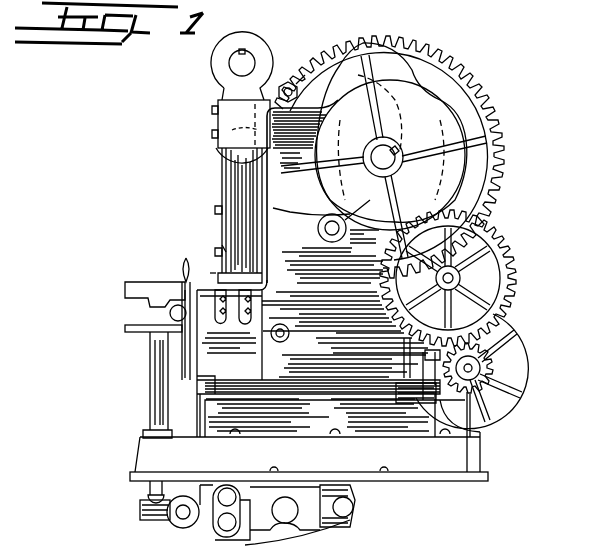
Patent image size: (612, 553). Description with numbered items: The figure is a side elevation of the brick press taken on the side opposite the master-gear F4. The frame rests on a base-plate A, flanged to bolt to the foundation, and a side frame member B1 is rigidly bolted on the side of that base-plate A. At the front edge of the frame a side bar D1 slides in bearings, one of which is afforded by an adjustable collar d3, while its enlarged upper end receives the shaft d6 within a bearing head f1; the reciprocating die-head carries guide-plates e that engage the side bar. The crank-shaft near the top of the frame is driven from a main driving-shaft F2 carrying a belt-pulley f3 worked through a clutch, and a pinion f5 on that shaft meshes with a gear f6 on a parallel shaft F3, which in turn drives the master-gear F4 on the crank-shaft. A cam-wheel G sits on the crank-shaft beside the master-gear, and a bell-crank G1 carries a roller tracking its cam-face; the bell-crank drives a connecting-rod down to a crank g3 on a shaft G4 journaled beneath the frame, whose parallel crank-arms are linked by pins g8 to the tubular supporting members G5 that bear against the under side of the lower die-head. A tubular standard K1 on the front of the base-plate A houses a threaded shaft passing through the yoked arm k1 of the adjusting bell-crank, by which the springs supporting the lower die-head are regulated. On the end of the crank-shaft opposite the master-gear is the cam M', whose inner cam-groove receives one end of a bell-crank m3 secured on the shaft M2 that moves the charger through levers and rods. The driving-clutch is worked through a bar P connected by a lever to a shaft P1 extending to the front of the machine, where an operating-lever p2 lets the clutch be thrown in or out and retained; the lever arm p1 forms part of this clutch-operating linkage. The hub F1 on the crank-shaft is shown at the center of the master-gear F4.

The base-plate A is at (470, 477).
The side frame member B1 is at (490, 437).
The tubular standard K1 is at (153, 391).
The arm of bell-crank k1 is at (142, 512).
The operating-lever p2 is at (185, 350).
The tubular supporting member G5 is at (180, 518).
The pin g8 is at (228, 490).
The shaft G4 is at (304, 520).
The crank g3 is at (348, 520).
The shaft P1 is at (378, 395).
The rod p1 is at (432, 395).
The bar P is at (520, 395).
The side bar D1 is at (225, 180).
The bell-crank m3 is at (228, 193).
The collar d3 is at (213, 273).
The guide-plate e is at (222, 249).
The bracket f1 is at (243, 117).
The shaft d6 is at (230, 70).
The cam-wheel G is at (470, 137).
The shaft F1 is at (405, 161).
The master-gear F4 is at (455, 108).
The cam M' is at (398, 121).
The shaft M2 is at (318, 232).
The bell-crank G1 is at (478, 216).
The shaft F3 is at (455, 278).
The gear f6 is at (485, 355).
The main driving-shaft F2 is at (500, 325).
The belt-pulley f3 is at (523, 370).
The pinion f5 is at (505, 405).